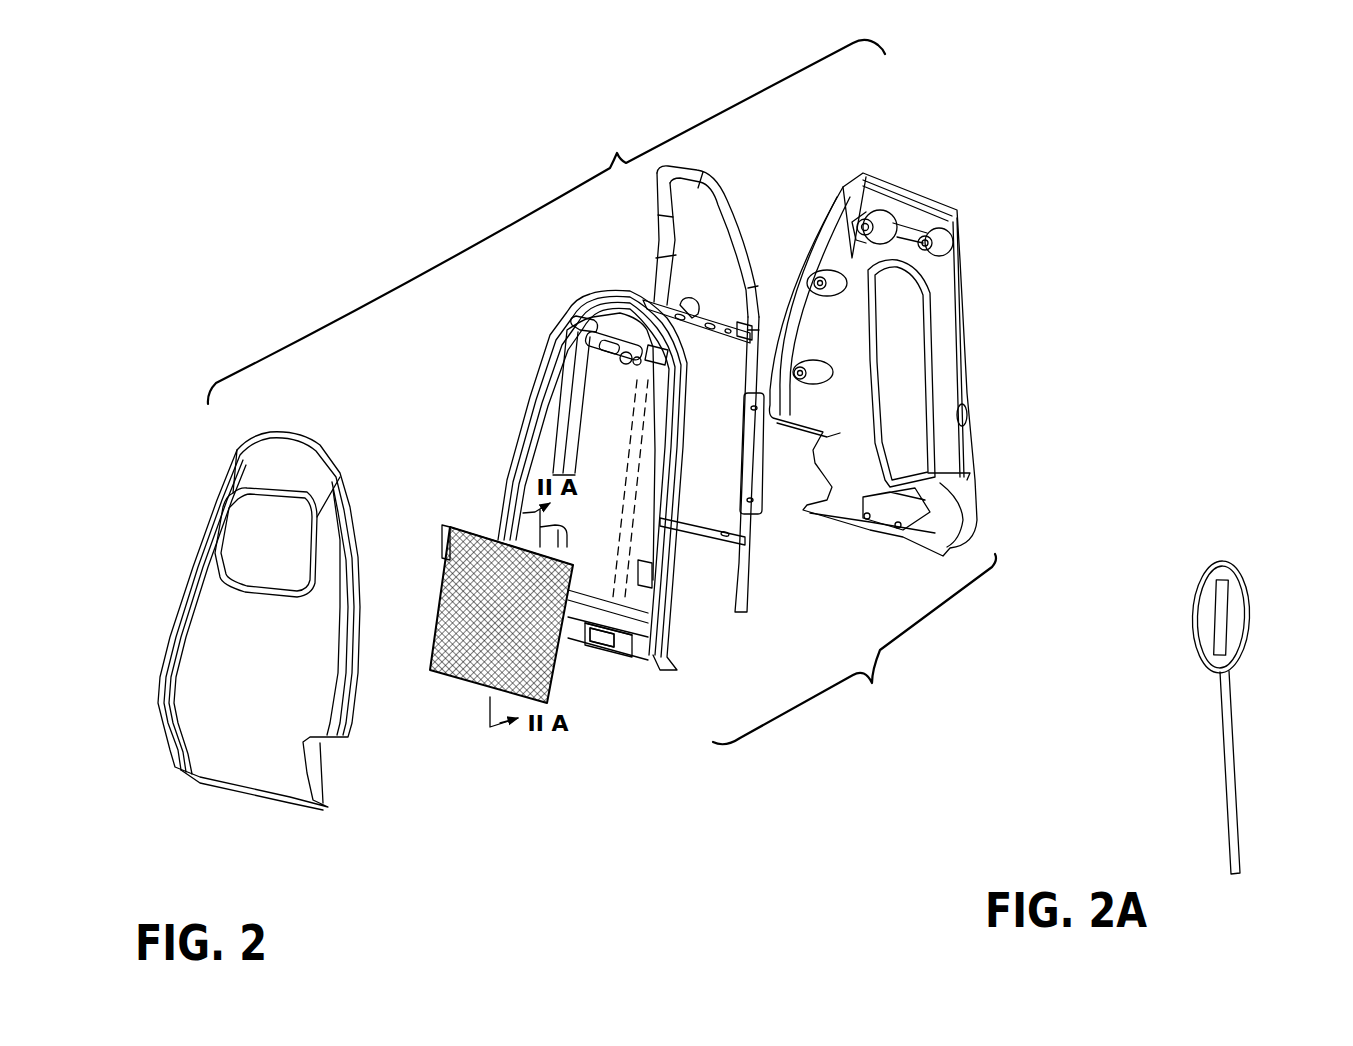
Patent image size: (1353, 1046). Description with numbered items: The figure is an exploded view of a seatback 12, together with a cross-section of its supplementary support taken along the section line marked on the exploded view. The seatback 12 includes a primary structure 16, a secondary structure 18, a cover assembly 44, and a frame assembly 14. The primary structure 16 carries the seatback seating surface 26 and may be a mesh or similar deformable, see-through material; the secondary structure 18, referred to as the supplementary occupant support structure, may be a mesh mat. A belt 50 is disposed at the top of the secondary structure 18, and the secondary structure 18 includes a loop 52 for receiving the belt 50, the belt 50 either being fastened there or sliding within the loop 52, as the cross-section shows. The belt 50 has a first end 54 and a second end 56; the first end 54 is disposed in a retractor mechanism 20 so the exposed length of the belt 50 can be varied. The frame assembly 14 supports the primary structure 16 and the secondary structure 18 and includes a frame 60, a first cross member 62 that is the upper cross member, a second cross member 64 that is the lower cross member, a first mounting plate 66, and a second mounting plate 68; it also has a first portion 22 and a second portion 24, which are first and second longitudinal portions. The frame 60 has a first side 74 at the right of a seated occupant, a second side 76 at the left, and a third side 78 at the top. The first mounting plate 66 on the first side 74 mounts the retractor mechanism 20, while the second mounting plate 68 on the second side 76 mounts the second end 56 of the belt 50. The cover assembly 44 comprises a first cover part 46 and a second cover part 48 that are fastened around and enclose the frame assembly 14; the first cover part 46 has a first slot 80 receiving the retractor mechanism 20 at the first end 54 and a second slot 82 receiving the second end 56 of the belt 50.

In FIG. 2, the seatback 12 is at (546, 222).
In FIG. 2, the frame assembly 14 is at (707, 349).
In FIG. 2, the primary structure 16 is at (150, 652).
In FIG. 2, the secondary structure 18 is at (482, 641).
In FIG. 2A, the secondary structure 18 is at (1259, 683).
In FIG. 2, the retractor mechanism 20 is at (445, 532).
In FIG. 2, the first portion 22 is at (657, 280).
In FIG. 2, the second portion 24 is at (759, 358).
In FIG. 2, the seatback seating surface 26 is at (250, 683).
In FIG. 2, the cover assembly 44 is at (854, 649).
In FIG. 2, the first cover part 46 is at (558, 382).
In FIG. 2, the second cover part 48 is at (936, 300).
In FIG. 2, the belt 50 is at (575, 572).
In FIG. 2A, the belt 50 is at (1228, 618).
In FIG. 2A, the loop 52 is at (1216, 562).
In FIG. 2, the first end 54 is at (442, 545).
In FIG. 2, the second end 56 is at (605, 590).
In FIG. 2, the frame 60 is at (764, 302).
In FIG. 2, the first cross member 62 is at (700, 330).
In FIG. 2, the second cross member 64 is at (684, 522).
In FIG. 2, the first mounting plate 66 is at (640, 423).
In FIG. 2, the second mounting plate 68 is at (754, 478).
In FIG. 2, the first side 74 is at (665, 250).
In FIG. 2, the second side 76 is at (748, 232).
In FIG. 2, the third side 78 is at (698, 174).
In FIG. 2, the first slot 80 is at (540, 540).
In FIG. 2, the second slot 82 is at (655, 593).